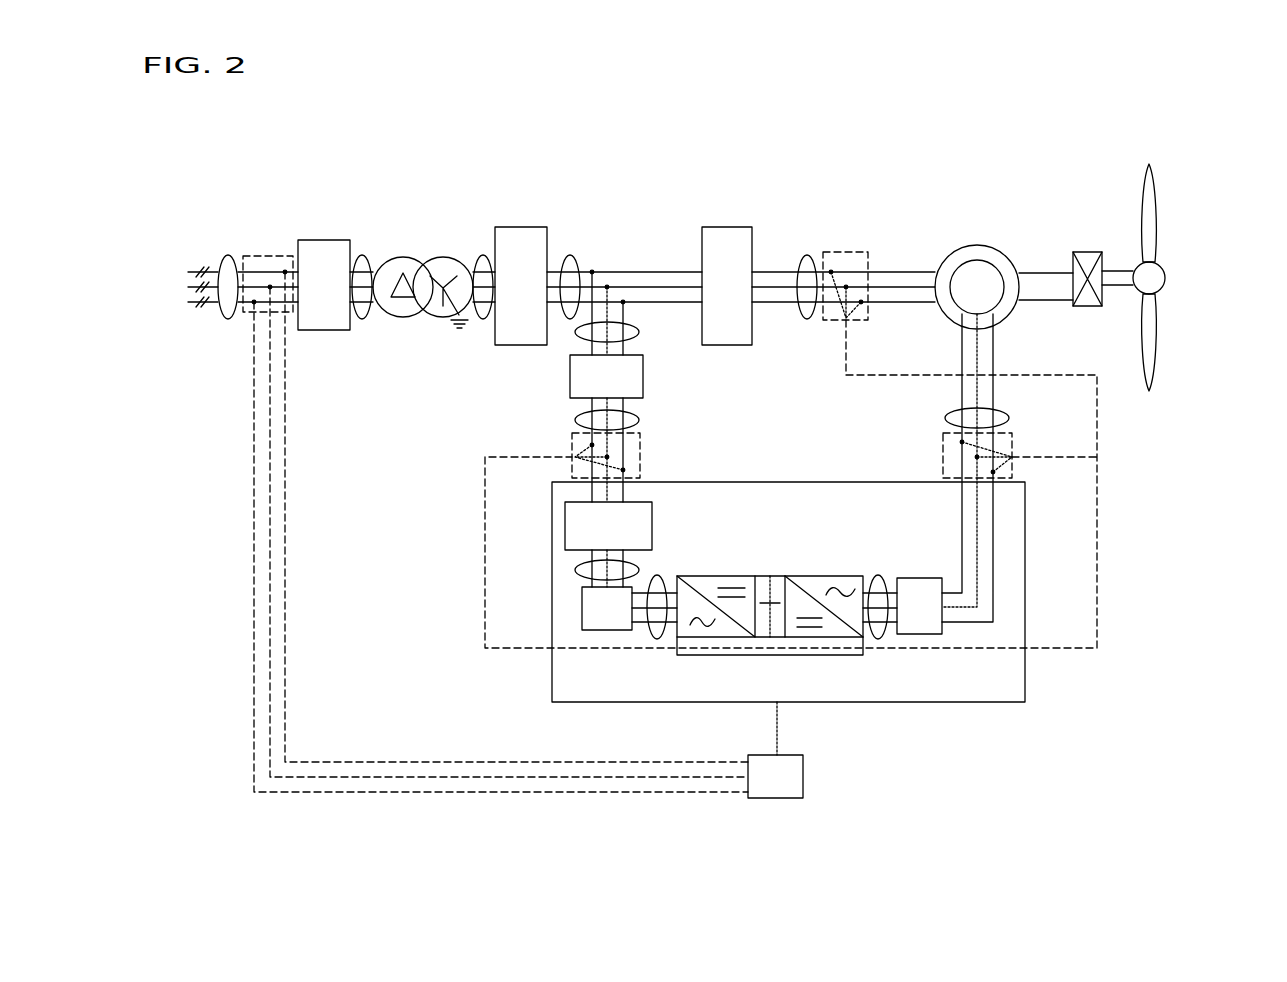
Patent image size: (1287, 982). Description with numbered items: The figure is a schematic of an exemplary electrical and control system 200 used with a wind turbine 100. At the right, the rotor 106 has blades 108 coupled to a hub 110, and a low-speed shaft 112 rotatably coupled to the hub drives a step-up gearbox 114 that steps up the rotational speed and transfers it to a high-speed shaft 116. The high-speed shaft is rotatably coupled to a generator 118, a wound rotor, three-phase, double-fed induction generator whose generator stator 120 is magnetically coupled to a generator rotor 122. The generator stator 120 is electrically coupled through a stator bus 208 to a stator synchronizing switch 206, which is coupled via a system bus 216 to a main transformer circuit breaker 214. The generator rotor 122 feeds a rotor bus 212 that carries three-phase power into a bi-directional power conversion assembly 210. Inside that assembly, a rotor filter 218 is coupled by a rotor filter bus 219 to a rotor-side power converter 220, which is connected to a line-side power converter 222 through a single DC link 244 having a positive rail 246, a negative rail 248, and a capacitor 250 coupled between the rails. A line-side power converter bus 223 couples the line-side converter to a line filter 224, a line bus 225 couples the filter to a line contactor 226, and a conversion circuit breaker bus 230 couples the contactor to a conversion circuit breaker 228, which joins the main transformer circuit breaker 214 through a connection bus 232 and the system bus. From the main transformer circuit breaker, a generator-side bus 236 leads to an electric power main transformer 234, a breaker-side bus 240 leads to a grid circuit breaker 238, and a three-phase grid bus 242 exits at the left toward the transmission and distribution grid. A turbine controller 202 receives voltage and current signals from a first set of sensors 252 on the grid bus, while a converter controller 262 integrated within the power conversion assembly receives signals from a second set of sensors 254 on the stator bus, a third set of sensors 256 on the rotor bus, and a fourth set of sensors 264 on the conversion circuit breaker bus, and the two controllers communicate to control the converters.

The wind turbine 100 is at (1182, 251).
The rotor 106 is at (1198, 277).
The blades 108 is at (1160, 218).
The hub 110 is at (1168, 280).
The low-speed shaft 112 is at (1115, 270).
The step-up gearbox 114 is at (1083, 252).
The high-speed shaft 116 is at (1046, 272).
The generator 118 is at (987, 226).
The generator stator 120 is at (980, 243).
The generator rotor 122 is at (972, 268).
The electrical and control system 200 is at (272, 133).
The turbine controller 202 is at (797, 793).
The stator synchronizing switch 206 is at (727, 227).
The stator bus 208 is at (807, 255).
The bi-directional power conversion assembly 210 is at (1025, 587).
The rotor bus 212 is at (1012, 420).
The main transformer circuit breaker 214 is at (523, 227).
The system bus 216 is at (570, 255).
The rotor filter 218 is at (917, 588).
The rotor filter bus 219 is at (878, 575).
The rotor-side power converter 220 is at (877, 640).
The line-side power converter 222 is at (678, 640).
The line-side power converter bus 223 is at (657, 578).
The line filter 224 is at (582, 605).
The line bus 225 is at (575, 570).
The line contactor 226 is at (565, 522).
The conversion circuit breaker 228 is at (648, 378).
The conversion circuit breaker bus 230 is at (637, 420).
The connection bus 232 is at (635, 332).
The electric power main transformer 234 is at (442, 258).
The generator-side bus 236 is at (483, 253).
The grid circuit breaker 238 is at (322, 240).
The breaker-side bus 240 is at (362, 255).
The grid bus 242 is at (228, 255).
The DC link 244 is at (757, 593).
The positive rail 246 is at (782, 589).
The negative rail 248 is at (782, 643).
The capacitor 250 is at (768, 600).
The first set of voltage and electric current sensors 252 is at (243, 320).
The second set of voltage and electric current sensors 254 is at (859, 240).
The third set of voltage and electric current sensors 256 is at (928, 455).
The converter controller 262 is at (825, 645).
The fourth set of voltage and electric current sensors 264 is at (645, 455).